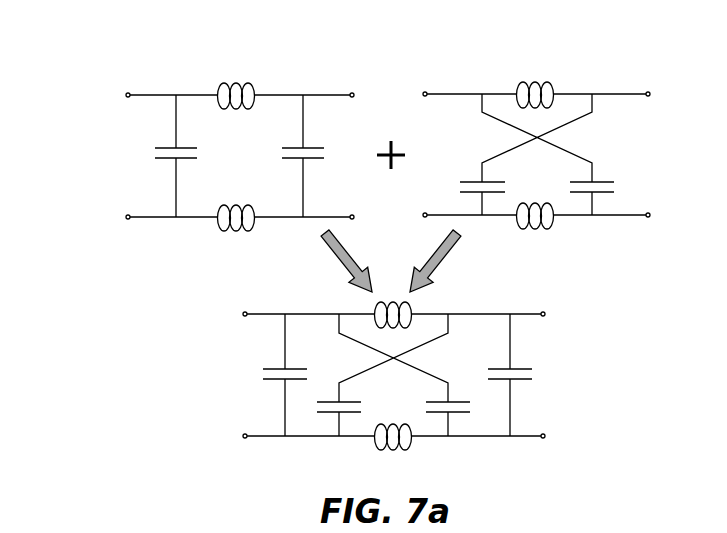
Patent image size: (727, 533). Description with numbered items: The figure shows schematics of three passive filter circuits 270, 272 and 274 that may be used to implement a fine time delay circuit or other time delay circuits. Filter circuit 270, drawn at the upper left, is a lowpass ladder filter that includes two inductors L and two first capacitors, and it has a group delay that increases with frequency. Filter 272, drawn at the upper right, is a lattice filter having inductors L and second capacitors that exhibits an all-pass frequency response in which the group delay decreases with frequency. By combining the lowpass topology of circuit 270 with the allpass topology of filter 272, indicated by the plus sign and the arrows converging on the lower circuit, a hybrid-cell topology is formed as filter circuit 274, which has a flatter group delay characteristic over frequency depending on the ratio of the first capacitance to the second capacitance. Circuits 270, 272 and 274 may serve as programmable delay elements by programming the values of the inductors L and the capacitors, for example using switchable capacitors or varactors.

The passive filter circuit 270 is at (103, 68).
The lattice filter 272 is at (472, 66).
The hybrid-cell filter circuit 274 is at (210, 328).